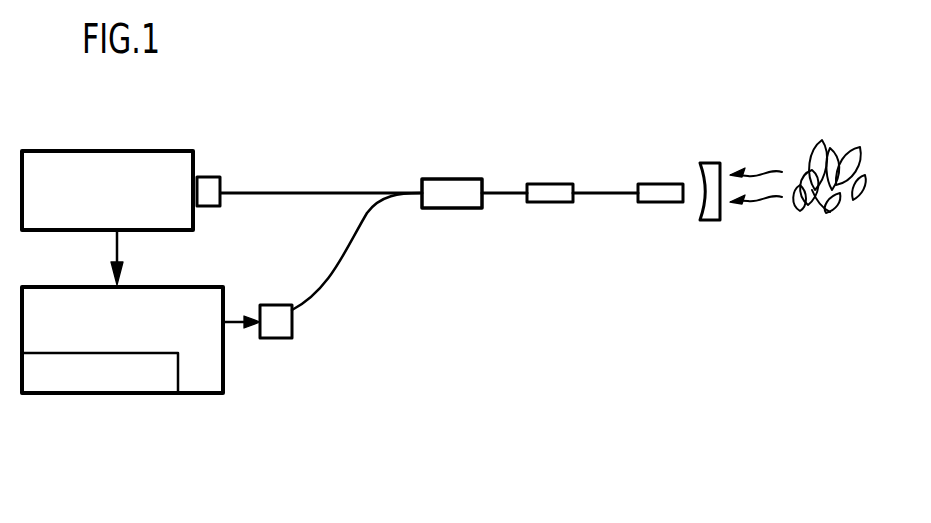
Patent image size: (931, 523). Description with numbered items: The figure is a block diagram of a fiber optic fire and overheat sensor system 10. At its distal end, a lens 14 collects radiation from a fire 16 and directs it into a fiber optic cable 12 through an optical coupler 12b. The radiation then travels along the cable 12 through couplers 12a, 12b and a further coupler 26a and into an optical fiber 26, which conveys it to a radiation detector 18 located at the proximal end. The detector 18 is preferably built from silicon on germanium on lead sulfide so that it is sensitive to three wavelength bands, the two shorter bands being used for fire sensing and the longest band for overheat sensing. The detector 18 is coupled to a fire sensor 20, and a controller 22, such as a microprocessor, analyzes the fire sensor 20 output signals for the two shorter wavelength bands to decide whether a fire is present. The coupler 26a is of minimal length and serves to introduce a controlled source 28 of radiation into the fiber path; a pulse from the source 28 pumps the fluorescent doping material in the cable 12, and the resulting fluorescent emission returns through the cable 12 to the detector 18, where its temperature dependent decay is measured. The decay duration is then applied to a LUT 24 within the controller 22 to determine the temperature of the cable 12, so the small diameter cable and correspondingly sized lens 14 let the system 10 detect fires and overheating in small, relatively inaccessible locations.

The fiber optic fire and overheat sensor system 10 is at (470, 333).
The fiber optic cable 12 is at (593, 192).
The coupler 12a is at (535, 184).
The optical coupler 12b is at (658, 183).
The lens 14 is at (707, 220).
The fire 16 is at (807, 140).
The radiation detector 18 is at (210, 175).
The fire sensor 20 is at (52, 149).
The controller 22 is at (203, 395).
The LUT 24 is at (90, 395).
The optical fiber 26 is at (300, 193).
The coupler 26a is at (447, 178).
The controlled source 28 is at (275, 338).